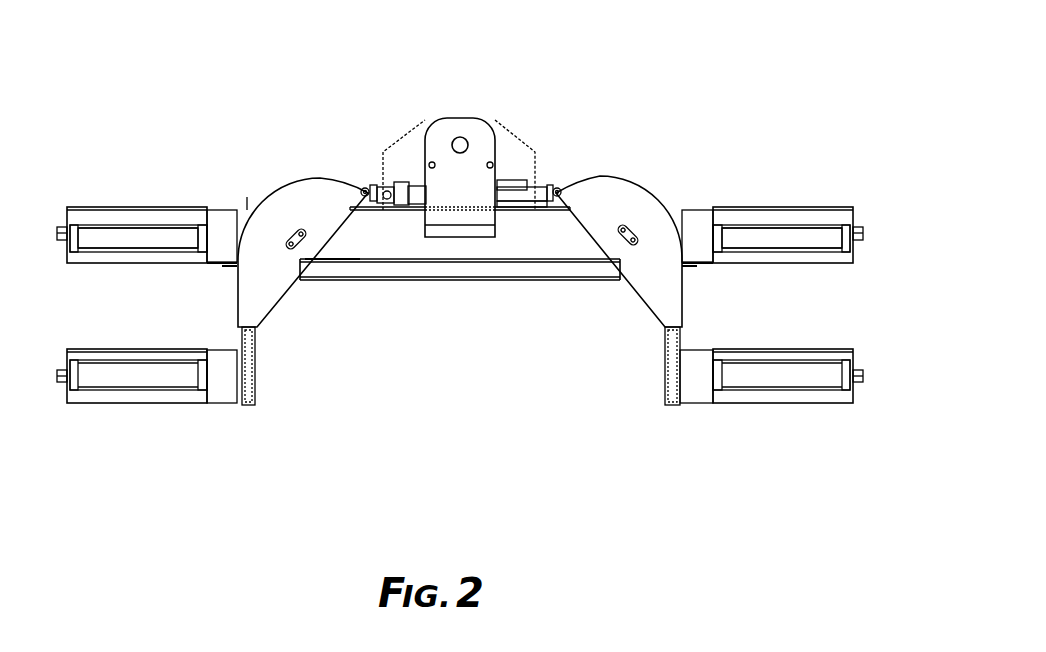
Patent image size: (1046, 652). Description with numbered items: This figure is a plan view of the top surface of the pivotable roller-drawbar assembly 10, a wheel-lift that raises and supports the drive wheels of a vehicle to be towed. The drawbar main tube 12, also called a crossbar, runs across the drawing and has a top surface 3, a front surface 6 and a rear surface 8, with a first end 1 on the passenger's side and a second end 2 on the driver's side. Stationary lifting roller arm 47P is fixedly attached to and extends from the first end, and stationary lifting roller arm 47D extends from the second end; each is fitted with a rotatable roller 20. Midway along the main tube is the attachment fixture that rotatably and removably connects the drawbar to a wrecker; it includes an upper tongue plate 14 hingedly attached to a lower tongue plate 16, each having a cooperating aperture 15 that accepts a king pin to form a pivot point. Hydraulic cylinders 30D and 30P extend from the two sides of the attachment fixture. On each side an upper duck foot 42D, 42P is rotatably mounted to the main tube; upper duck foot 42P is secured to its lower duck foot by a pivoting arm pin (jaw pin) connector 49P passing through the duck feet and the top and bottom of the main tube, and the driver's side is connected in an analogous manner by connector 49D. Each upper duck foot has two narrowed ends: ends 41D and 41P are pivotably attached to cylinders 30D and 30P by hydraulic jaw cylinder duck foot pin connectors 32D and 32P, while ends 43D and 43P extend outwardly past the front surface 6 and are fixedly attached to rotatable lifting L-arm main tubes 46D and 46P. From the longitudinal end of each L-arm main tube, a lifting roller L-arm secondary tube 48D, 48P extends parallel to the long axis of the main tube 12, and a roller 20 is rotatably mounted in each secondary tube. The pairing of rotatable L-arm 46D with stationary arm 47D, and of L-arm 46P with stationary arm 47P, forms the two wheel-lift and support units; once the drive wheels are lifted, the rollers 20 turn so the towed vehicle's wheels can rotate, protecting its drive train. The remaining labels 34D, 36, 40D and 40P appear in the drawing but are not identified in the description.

The first end 1 is at (694, 244).
The second end 2 is at (221, 222).
The top surface 3 is at (346, 246).
The front surface 6 is at (216, 266).
The rear surface 8 is at (246, 191).
The pivotable roller-drawbar assembly 10 is at (650, 61).
The drawbar main tube 12 is at (432, 297).
The upper tongue plate 14 is at (487, 133).
The aperture 15 is at (462, 137).
The lower tongue plate 16 is at (518, 148).
The roller 20 is at (150, 238).
The hydraulic cylinder arm 30D is at (377, 183).
The hydraulic cylinder arm 30P is at (553, 186).
The hydraulic jaw cylinder duck foot pin connector 32D is at (373, 184).
The hydraulic jaw cylinder duck foot pin connector 32P is at (562, 192).
The driver-side pivot pin 34D is at (389, 203).
The base member 36 is at (462, 280).
The driver-side arm assembly 40D is at (286, 276).
The passenger-side arm assembly 40P is at (635, 278).
The narrowed end 41D is at (363, 189).
The narrowed end 41P is at (555, 200).
The upper duck foot 42D is at (293, 187).
The upper duck foot 42P is at (638, 188).
The narrowed end 43D is at (241, 327).
The narrowed end 43P is at (658, 372).
The rotatable lifting L-arm main tube 46D is at (252, 408).
The rotatable lifting L-arm main tube 46P is at (662, 394).
The stationary lifting roller arm 47D is at (150, 202).
The stationary lifting roller arm 47P is at (770, 202).
The lifting roller L-arm secondary tube 48D is at (125, 404).
The lifting roller L-arm secondary tube 48P is at (692, 408).
The driver-side bracket 49D is at (302, 250).
The pivoting arm pin (jaw pin) connector 49P is at (636, 222).